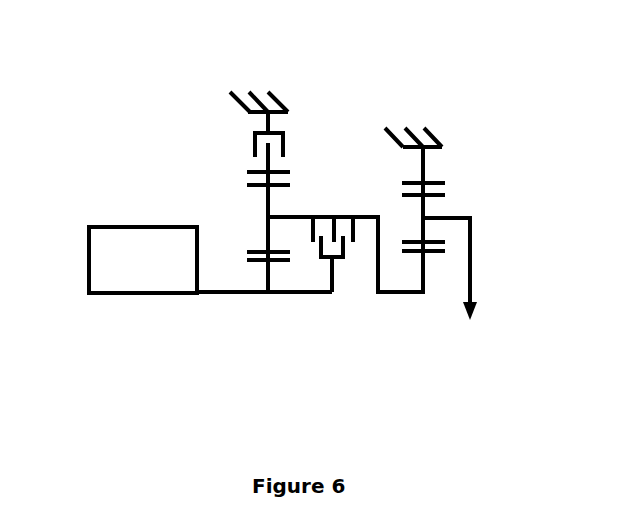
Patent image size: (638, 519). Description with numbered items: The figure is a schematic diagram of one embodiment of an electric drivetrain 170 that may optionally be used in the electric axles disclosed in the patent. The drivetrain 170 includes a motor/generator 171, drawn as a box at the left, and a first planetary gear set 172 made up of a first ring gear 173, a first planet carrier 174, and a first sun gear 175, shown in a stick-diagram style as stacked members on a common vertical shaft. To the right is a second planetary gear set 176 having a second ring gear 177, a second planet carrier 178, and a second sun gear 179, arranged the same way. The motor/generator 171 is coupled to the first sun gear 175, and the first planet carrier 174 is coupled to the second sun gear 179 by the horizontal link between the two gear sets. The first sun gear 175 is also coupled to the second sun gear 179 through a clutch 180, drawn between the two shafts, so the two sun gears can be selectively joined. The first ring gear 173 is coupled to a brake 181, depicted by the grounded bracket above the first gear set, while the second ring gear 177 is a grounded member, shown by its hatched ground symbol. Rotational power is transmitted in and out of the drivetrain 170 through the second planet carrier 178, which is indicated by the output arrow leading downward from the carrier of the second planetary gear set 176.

The electric drivetrain 170 is at (134, 77).
The motor/generator 171 is at (108, 225).
The first planetary gear set 172 is at (260, 340).
The first ring gear 173 is at (270, 172).
The first planet carrier 174 is at (267, 230).
The first sun gear 175 is at (269, 277).
The second planetary gear set 176 is at (419, 330).
The second ring gear 177 is at (423, 162).
The second planet carrier 178 is at (423, 208).
The second sun gear 179 is at (423, 265).
The clutch 180 is at (343, 248).
The brake 181 is at (285, 131).